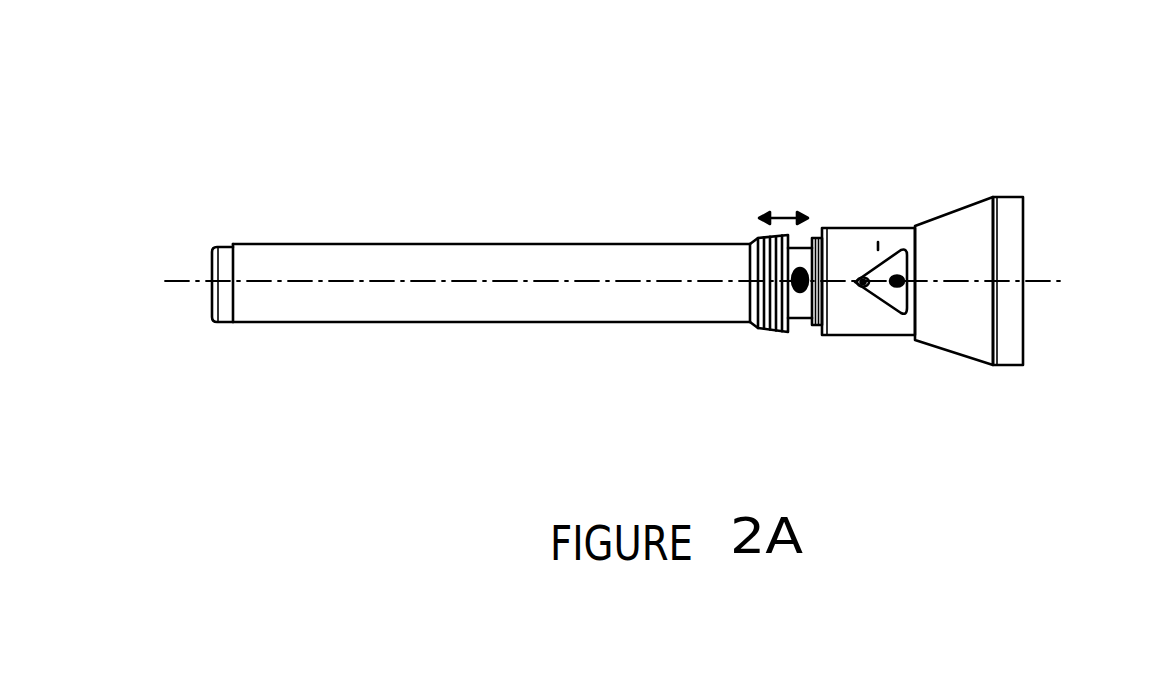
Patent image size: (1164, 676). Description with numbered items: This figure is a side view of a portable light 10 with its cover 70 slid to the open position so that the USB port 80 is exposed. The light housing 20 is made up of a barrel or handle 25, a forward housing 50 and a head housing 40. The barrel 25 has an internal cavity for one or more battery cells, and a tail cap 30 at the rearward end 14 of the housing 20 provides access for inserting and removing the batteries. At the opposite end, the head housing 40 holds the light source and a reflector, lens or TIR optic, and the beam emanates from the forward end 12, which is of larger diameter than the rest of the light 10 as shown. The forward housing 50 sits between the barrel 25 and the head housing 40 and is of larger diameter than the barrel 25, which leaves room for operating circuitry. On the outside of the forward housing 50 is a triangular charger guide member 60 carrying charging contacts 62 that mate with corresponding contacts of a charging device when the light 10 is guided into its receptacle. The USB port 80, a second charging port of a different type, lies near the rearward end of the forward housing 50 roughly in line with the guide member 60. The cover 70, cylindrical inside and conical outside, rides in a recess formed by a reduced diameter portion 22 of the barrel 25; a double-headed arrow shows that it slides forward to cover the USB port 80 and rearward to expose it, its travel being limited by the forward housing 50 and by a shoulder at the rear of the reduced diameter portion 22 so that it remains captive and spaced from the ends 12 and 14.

The portable light 10 is at (558, 78).
The forward end 12 is at (1053, 251).
The rearward end 14 is at (190, 305).
The light housing 20 is at (450, 232).
The reduced diameter portion 22 is at (802, 252).
The barrel 25 is at (503, 323).
The tail cap 30 is at (226, 251).
The head housing 40 is at (966, 206).
The forward housing 50 is at (853, 228).
The charger guide member 60 is at (893, 253).
The charging contacts 62 is at (862, 288).
The slidable cover 70 is at (762, 332).
The USB port 80 is at (802, 296).